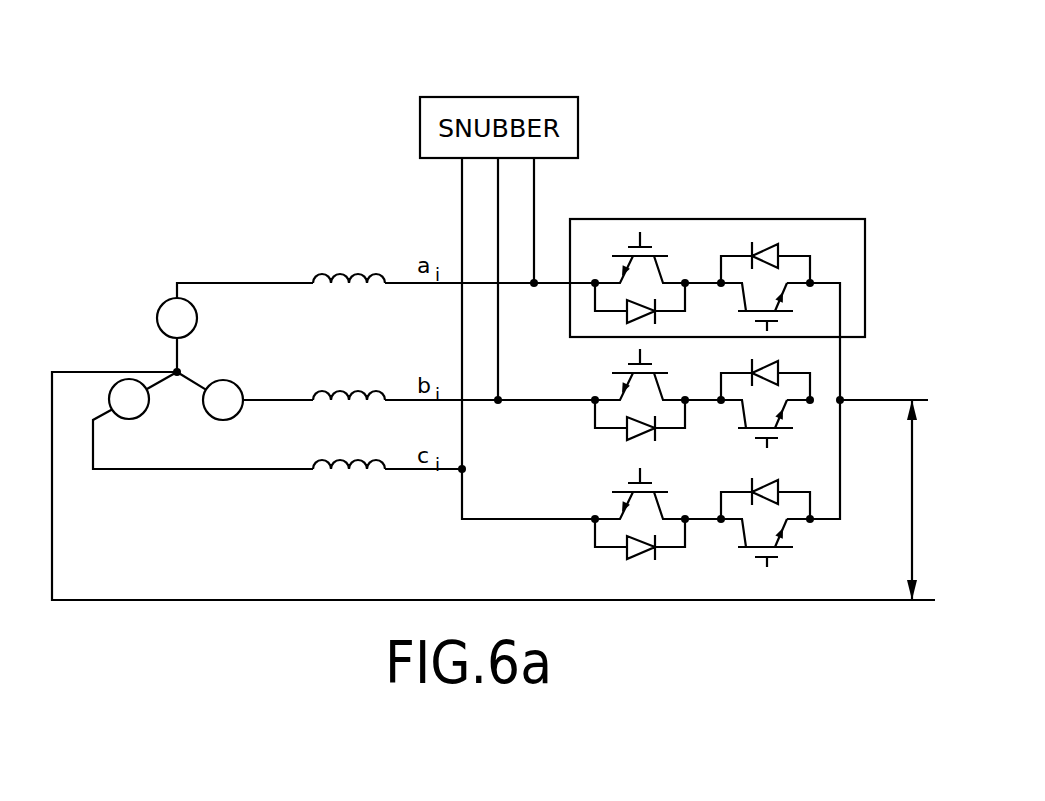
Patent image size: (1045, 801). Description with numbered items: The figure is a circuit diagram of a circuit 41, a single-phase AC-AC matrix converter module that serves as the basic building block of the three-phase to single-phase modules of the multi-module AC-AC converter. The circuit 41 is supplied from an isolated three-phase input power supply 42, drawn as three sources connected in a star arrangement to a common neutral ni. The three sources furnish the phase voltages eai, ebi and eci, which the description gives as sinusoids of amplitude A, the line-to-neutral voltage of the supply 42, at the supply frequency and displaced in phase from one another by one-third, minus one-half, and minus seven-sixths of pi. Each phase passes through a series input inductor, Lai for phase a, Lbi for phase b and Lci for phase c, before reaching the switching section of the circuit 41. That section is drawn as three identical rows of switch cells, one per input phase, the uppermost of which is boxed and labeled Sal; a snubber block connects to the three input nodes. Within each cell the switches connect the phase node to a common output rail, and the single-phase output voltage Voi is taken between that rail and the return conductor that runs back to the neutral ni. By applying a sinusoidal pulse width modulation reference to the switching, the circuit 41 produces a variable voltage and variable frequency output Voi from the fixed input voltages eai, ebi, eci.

The circuit 41 is at (702, 119).
The isolated three-phase input power supply 42 is at (247, 234).
The bidirectional switch cell S_al Sal is at (710, 219).
The input inductor phase a Lai is at (349, 256).
The input inductor phase b Lbi is at (349, 374).
The input inductor phase c Lci is at (349, 445).
The input voltage e_ai eai is at (235, 327).
The input voltage e_bi ebi is at (245, 389).
The input voltage e_ci eci is at (203, 420).
The input neutral ni is at (116, 358).
The output voltage Voi is at (910, 500).